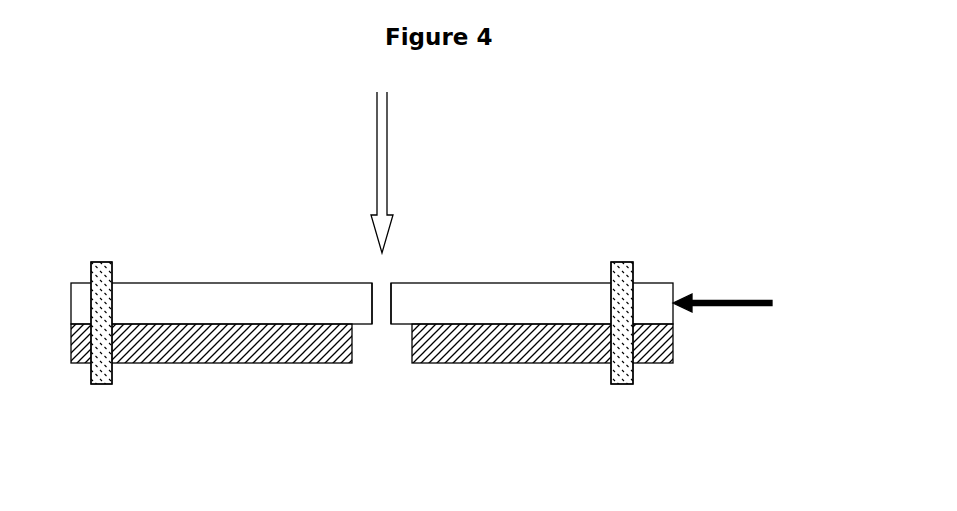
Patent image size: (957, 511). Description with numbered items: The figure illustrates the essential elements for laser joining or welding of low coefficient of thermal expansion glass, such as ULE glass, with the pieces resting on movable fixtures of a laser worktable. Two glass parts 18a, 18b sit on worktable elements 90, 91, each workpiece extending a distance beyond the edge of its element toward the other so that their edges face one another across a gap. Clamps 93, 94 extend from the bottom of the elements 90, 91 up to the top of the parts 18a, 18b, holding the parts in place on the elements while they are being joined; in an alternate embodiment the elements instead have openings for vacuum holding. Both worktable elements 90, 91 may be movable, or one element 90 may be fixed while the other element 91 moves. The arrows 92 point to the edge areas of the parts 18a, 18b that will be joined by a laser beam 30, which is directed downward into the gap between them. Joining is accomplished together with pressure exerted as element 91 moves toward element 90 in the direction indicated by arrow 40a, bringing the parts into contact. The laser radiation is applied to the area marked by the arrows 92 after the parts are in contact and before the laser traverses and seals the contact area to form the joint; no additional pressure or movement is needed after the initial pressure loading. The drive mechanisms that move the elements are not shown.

The part 18a is at (532, 303).
The part 18b is at (221, 303).
The laser beam 30 is at (381, 164).
The arrow 40a is at (722, 294).
The movable element 90 is at (232, 357).
The movable element 91 is at (472, 357).
The arrow 92 is at (372, 272).
The clamp 93 is at (92, 383).
The clamp 94 is at (612, 379).